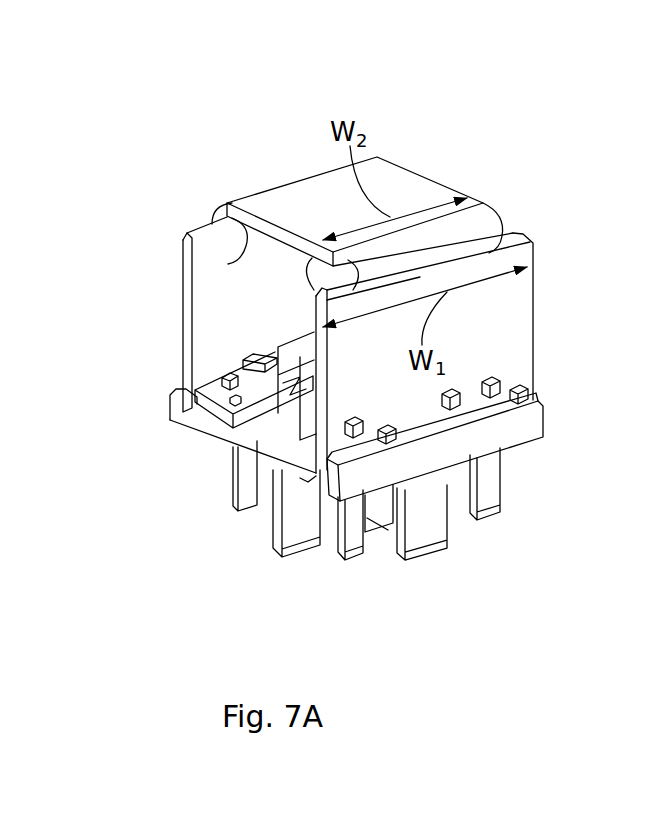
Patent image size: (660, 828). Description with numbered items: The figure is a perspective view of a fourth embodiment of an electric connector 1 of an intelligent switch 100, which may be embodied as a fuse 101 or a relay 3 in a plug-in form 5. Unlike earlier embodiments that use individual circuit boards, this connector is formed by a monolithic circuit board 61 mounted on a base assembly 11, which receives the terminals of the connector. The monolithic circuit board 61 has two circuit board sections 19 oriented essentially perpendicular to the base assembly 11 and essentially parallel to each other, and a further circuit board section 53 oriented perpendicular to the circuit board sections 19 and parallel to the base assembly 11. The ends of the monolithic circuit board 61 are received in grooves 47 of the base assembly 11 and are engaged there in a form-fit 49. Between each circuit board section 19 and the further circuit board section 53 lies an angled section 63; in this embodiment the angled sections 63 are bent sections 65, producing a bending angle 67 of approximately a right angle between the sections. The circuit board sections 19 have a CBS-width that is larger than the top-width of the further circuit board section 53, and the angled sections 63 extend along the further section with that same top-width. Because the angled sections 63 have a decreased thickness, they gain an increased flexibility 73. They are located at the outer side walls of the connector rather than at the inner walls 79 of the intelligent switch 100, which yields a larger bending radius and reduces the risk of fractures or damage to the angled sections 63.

The intelligent switch 100 is at (291, 160).
The fuse 101 is at (330, 346).
The electric connector 1 is at (262, 156).
The relay 3 is at (330, 353).
The plug-in form 5 is at (330, 353).
The further circuit board section 53 is at (387, 170).
The monolithic circuit board 61 is at (432, 192).
The circuit board sections 19 is at (190, 265).
The increased flexibility 73 is at (226, 196).
The angled section 63 is at (532, 142).
The bent section 65 is at (210, 208).
The bending angle 67 is at (307, 268).
The inner walls 79 is at (203, 362).
The base assembly 11 is at (518, 428).
The form-fit 49 is at (166, 404).
The grooves 47 is at (172, 417).